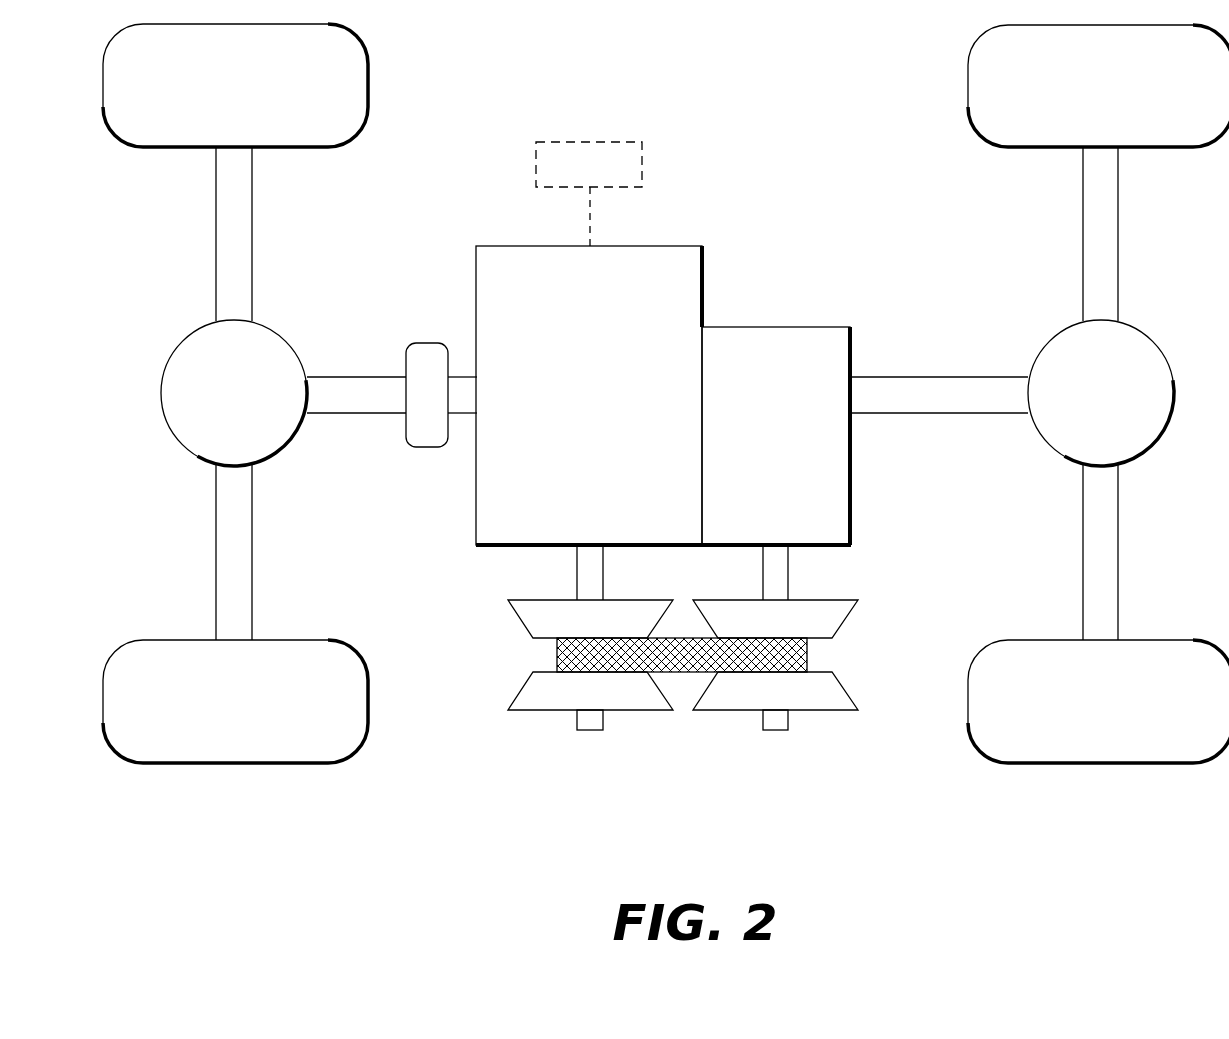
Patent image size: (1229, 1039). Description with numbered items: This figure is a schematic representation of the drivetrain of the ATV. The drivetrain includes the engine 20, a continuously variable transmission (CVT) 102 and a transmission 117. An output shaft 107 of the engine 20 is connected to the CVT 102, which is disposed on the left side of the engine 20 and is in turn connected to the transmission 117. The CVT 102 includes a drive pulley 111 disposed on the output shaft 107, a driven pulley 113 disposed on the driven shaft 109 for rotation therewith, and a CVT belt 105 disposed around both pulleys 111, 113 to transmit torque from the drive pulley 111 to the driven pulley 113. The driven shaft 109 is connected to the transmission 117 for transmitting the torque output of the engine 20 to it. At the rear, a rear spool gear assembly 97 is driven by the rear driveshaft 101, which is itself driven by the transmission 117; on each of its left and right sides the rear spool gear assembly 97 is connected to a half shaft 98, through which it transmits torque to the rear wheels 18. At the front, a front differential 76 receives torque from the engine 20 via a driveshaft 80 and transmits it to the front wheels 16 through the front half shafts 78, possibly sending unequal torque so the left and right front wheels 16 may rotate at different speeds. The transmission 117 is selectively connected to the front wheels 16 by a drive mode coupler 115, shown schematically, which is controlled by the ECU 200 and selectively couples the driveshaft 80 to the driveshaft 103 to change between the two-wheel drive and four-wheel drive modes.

The front wheels 16 is at (225, 96).
The rear wheels 18 is at (1091, 97).
The engine 20 is at (582, 402).
The front differential 76 is at (224, 403).
The half shaft 78 is at (252, 252).
The driveshaft 80 is at (358, 377).
The rear spool gear assembly 97 is at (1091, 403).
The half shaft 98 is at (1118, 242).
The rear driveshaft 101 is at (945, 377).
The continuously variable transmission 102 is at (688, 710).
The driveshaft 103 is at (462, 403).
The CVT belt 105 is at (677, 672).
The output shaft 107 is at (590, 730).
The driven shaft 109 is at (775, 730).
The drive pulley 111 is at (511, 720).
The driven pulley 113 is at (850, 720).
The drive mode coupler 115 is at (432, 343).
The transmission 117 is at (765, 443).
The ECU 200 is at (575, 175).